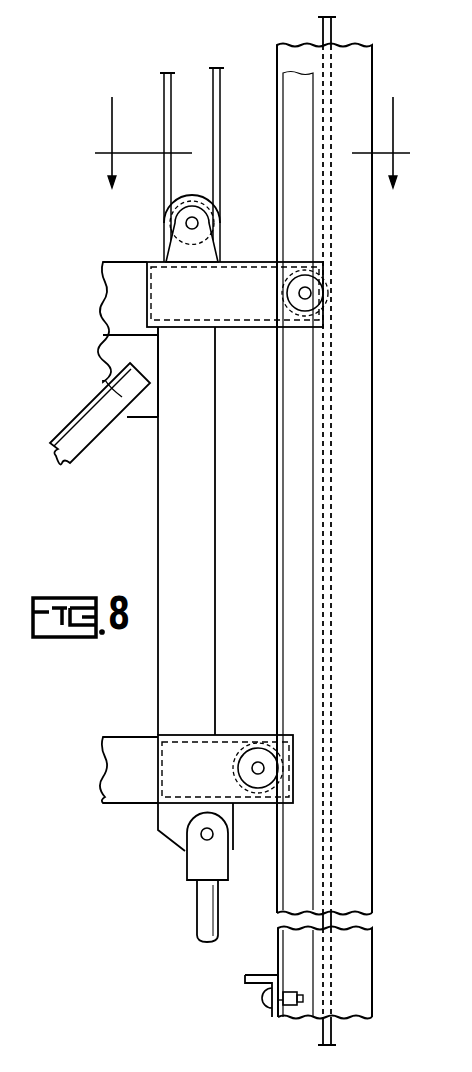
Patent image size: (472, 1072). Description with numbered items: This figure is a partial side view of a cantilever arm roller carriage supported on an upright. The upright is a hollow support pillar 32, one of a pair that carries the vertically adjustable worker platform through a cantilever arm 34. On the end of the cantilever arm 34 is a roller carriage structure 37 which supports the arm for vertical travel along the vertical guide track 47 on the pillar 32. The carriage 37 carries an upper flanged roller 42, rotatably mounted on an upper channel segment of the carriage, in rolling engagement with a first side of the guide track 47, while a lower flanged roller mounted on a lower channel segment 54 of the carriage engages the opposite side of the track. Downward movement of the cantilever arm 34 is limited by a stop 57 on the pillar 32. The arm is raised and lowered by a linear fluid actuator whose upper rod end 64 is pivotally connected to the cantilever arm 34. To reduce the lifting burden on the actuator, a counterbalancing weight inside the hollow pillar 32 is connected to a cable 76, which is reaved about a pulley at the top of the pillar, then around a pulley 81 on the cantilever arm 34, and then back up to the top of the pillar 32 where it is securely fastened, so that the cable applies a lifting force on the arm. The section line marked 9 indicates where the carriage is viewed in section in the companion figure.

The section line for FIG. 9 is at (252, 127).
The upright hollow support pillar 32 is at (372, 663).
The cantilever arm 34 is at (122, 261).
The roller carriage structure 37 is at (215, 490).
The upper flanged roller 42 is at (330, 293).
The vertical guide track 47 is at (296, 828).
The lower channel segment 54 is at (232, 740).
The stop 57 is at (255, 975).
The rod end 64 is at (203, 920).
The cable 76 is at (164, 88).
The pulley 81 is at (178, 205).